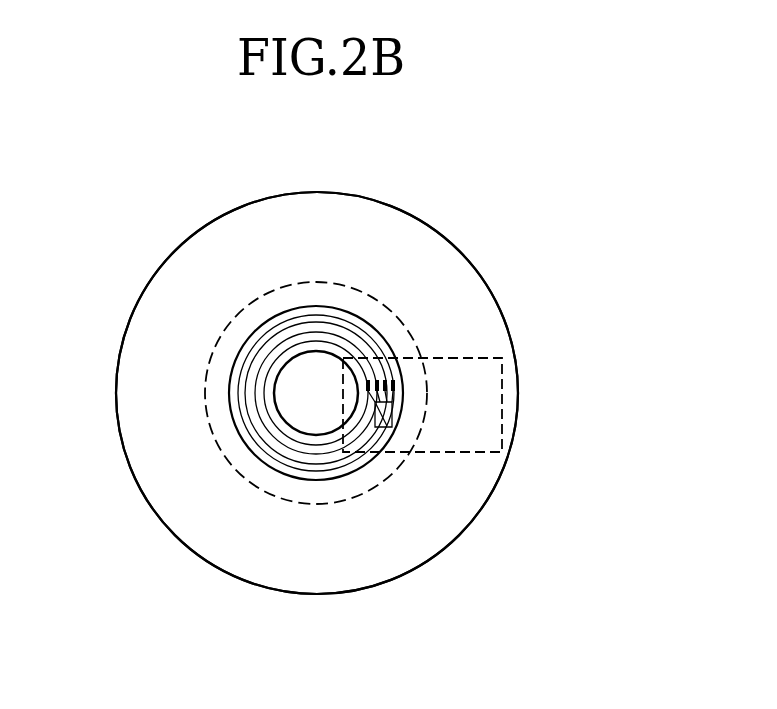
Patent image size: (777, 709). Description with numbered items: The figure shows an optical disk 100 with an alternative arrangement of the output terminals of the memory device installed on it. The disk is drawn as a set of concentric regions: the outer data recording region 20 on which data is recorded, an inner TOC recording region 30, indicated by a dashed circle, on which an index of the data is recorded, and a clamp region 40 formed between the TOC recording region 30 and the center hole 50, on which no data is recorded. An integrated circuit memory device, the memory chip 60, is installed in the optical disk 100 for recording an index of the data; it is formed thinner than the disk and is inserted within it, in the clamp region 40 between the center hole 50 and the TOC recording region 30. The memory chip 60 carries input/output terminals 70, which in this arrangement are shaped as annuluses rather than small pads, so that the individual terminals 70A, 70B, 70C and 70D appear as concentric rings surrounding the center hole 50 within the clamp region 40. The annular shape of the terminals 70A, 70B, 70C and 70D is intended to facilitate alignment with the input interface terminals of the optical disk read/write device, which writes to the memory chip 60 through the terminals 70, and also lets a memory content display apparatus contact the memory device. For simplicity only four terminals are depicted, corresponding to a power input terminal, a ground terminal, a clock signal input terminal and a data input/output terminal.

The optical disk 100 is at (452, 242).
The data recording region 20 is at (425, 337).
The TOC recording region 30 is at (360, 303).
The clamp region 40 is at (306, 303).
The center hole 50 is at (298, 412).
The memory chip 60 is at (388, 425).
The input/output terminals 70 is at (393, 385).
The input/output terminal 70A is at (263, 418).
The input/output terminal 70B is at (258, 412).
The input/output terminal 70C is at (252, 392).
The input/output terminal 70D is at (243, 366).